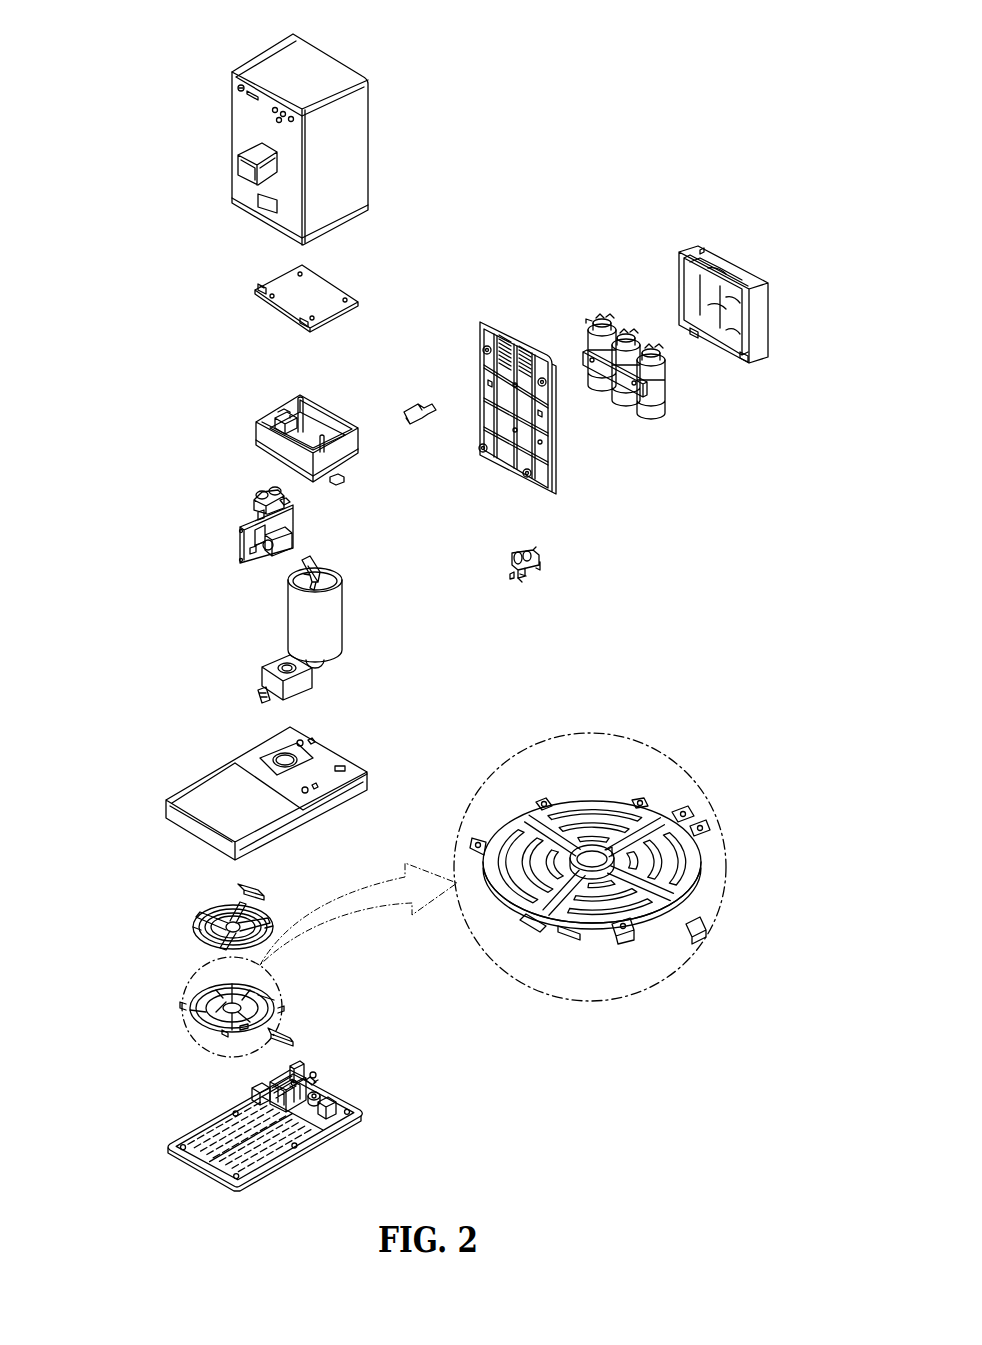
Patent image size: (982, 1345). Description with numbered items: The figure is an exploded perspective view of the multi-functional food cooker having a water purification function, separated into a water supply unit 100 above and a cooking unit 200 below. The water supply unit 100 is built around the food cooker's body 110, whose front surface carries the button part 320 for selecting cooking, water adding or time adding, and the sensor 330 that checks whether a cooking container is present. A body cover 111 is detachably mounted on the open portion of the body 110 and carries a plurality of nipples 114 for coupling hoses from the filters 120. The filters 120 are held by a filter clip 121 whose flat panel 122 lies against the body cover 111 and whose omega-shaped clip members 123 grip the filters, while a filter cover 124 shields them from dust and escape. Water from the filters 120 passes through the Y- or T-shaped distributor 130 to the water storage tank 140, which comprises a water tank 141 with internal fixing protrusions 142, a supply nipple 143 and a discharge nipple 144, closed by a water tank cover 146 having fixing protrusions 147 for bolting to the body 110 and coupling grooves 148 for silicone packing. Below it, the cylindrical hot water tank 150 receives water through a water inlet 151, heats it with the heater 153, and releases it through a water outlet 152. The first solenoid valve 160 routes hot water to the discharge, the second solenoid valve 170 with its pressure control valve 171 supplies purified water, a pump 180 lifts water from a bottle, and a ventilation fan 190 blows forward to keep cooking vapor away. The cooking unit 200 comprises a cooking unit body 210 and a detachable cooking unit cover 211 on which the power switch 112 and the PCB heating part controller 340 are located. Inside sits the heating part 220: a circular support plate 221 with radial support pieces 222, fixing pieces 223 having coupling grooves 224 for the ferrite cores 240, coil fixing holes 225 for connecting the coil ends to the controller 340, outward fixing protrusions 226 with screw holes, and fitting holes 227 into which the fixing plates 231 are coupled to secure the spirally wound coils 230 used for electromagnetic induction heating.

The water supply unit 100 is at (139, 247).
The food cooker's body 110 is at (298, 139).
The body cover 111 is at (553, 447).
The power switch 112 is at (308, 1062).
The nipples 114 is at (480, 378).
The filters 120 is at (638, 390).
The filter clip 121 is at (582, 350).
The flat panel 122 is at (620, 396).
The clip members 123 is at (662, 384).
The filter cover 124 is at (760, 311).
The distributor 130 is at (421, 402).
The water storage tank 140 is at (170, 262).
The water tank 141 is at (270, 450).
The fixing protrusions 142 is at (305, 404).
The supply nipple 143 is at (267, 422).
The discharge nipple 144 is at (337, 467).
The water tank cover 146 is at (331, 282).
The fixing protrusions 147 is at (257, 287).
The coupling grooves 148 is at (344, 321).
The hot water tank 150 is at (333, 615).
The water inlet 151 is at (318, 563).
The water outlet 152 is at (311, 656).
The heater 153 is at (250, 688).
The first solenoid valve 160 is at (252, 508).
The second solenoid valve 170 is at (542, 550).
The pressure control valve 171 is at (523, 583).
The pump 180 is at (300, 530).
The ventilation fan 190 is at (242, 539).
The cooking unit 200 is at (183, 784).
The cooking unit body 210 is at (288, 825).
The cooking unit cover 211 is at (316, 1143).
The heating part 220 is at (92, 863).
The support plate 221 is at (190, 1012).
The support pieces 222 is at (517, 913).
The fixing pieces 223 is at (565, 850).
The coupling grooves 224 is at (705, 889).
The coil fixing holes 225 is at (640, 803).
The fixing protrusions 226 is at (483, 837).
The fitting holes 227 is at (680, 829).
The coils 230 is at (202, 924).
The fixing plates 231 is at (235, 891).
The ferrite cores 240 is at (277, 1030).
The button part 320 is at (225, 80).
The sensor 330 is at (256, 200).
The heating part controller 340 is at (349, 1071).